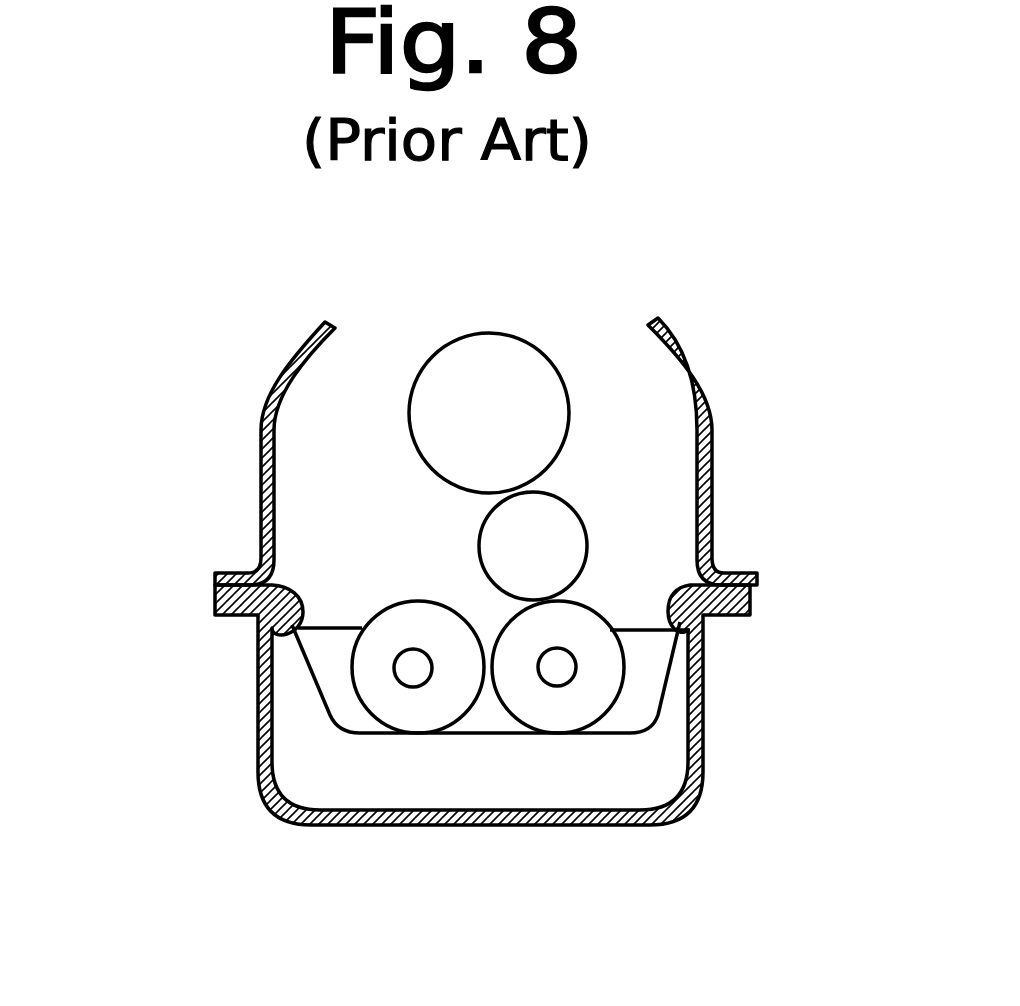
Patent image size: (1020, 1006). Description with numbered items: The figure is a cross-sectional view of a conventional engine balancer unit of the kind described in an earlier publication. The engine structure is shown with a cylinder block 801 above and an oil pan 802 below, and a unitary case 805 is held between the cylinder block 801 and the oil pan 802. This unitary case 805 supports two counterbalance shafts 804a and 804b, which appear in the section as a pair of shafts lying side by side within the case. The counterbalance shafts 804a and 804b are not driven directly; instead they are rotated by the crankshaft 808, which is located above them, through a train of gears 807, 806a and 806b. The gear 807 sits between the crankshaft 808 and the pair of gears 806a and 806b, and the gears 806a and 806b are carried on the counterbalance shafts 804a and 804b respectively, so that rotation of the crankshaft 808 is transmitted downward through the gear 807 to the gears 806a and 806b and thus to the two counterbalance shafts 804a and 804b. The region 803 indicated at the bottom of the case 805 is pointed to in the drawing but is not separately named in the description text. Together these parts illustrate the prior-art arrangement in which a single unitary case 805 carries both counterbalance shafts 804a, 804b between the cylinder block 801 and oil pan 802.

The cylinder block 801 is at (267, 473).
The oil pan 802 is at (268, 788).
The bottom of container 803 is at (492, 734).
The counterbalance shaft 804a is at (412, 675).
The counterbalance shaft 804b is at (556, 673).
The unitary case 805 is at (310, 687).
The gear 806a is at (400, 616).
The gear 806b is at (590, 622).
The gear 807 is at (567, 520).
The crankshaft 808 is at (550, 395).